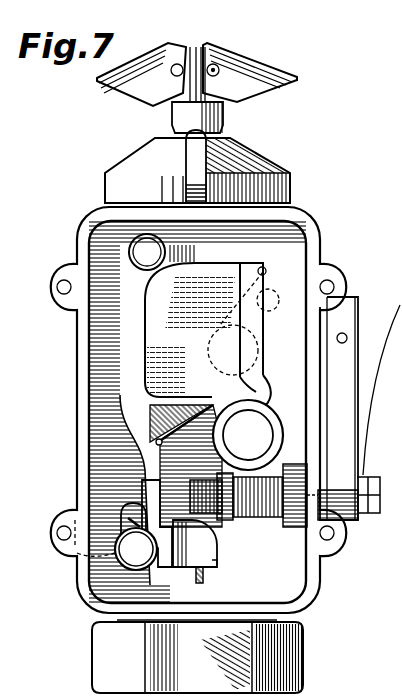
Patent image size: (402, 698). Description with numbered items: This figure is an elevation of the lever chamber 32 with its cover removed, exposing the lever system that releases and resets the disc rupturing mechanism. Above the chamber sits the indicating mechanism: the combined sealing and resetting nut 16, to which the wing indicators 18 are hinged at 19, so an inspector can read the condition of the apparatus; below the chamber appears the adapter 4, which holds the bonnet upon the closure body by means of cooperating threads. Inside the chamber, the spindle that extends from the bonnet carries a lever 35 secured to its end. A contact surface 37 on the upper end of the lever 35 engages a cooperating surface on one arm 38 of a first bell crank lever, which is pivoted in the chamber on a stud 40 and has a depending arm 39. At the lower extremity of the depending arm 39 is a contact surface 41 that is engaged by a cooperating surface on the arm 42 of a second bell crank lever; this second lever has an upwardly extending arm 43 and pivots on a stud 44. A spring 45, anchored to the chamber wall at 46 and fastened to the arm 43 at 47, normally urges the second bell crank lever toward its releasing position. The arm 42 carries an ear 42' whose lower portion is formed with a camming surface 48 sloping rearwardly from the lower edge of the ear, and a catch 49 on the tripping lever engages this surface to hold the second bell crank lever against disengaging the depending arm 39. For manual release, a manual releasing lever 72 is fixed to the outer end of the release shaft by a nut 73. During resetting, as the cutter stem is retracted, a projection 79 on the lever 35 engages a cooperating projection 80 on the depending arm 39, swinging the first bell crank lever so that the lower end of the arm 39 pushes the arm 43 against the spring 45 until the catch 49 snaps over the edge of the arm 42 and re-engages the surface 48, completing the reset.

The adapter 4 is at (292, 662).
The nut 16 is at (250, 160).
The wing indicators 18 is at (131, 87).
The hinge 19 is at (219, 71).
The lever chamber 32 is at (77, 402).
The lever 35 is at (266, 384).
The contact surface 37 is at (264, 272).
The arm 38 is at (232, 251).
The depending arm 39 is at (126, 353).
The stud 40 is at (135, 250).
The contact surface 41 is at (140, 483).
The arm 42 is at (89, 580).
The ear 42' is at (226, 543).
The upwardly extending arm 43 is at (128, 508).
The stud 44 is at (123, 563).
The spring 45 is at (155, 573).
The spring anchorage 46 is at (77, 555).
The spring attachment 47 is at (130, 522).
The camming surface 48 is at (217, 562).
The catch 49 is at (205, 582).
The manual releasing lever 72 is at (338, 408).
The nut 73 is at (367, 513).
The projection 79 is at (204, 440).
The projection 80 is at (188, 406).